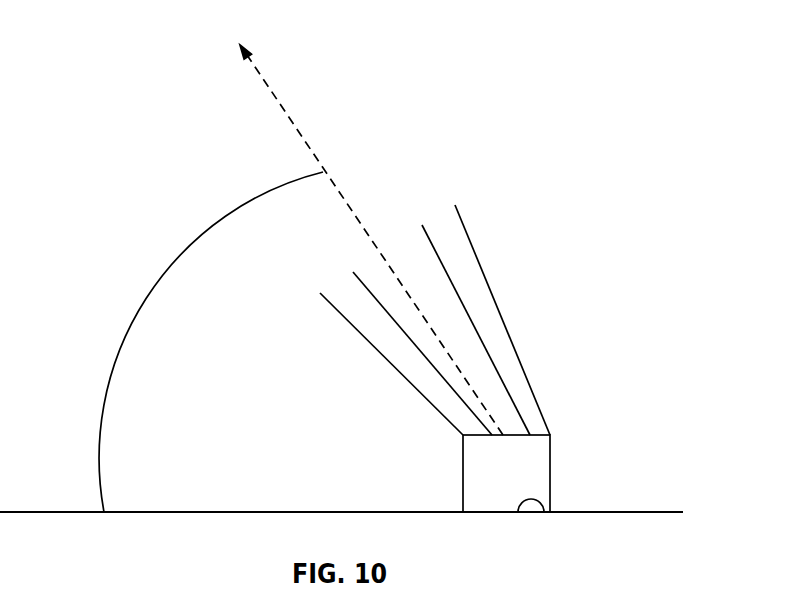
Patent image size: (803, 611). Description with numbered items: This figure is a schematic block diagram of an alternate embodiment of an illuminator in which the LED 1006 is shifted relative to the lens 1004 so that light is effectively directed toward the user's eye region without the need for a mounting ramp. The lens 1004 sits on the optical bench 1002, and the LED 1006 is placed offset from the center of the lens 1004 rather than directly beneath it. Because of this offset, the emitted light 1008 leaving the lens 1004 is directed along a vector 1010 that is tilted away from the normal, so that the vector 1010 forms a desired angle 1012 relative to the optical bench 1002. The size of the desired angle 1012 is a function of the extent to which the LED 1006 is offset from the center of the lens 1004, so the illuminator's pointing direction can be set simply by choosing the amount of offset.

The optical bench 1002 is at (667, 511).
The lens 1004 is at (462, 473).
The LED 1006 is at (541, 507).
The emitted light 1008 is at (470, 236).
The vector 1010 is at (273, 92).
The desired angle 1012 is at (187, 252).